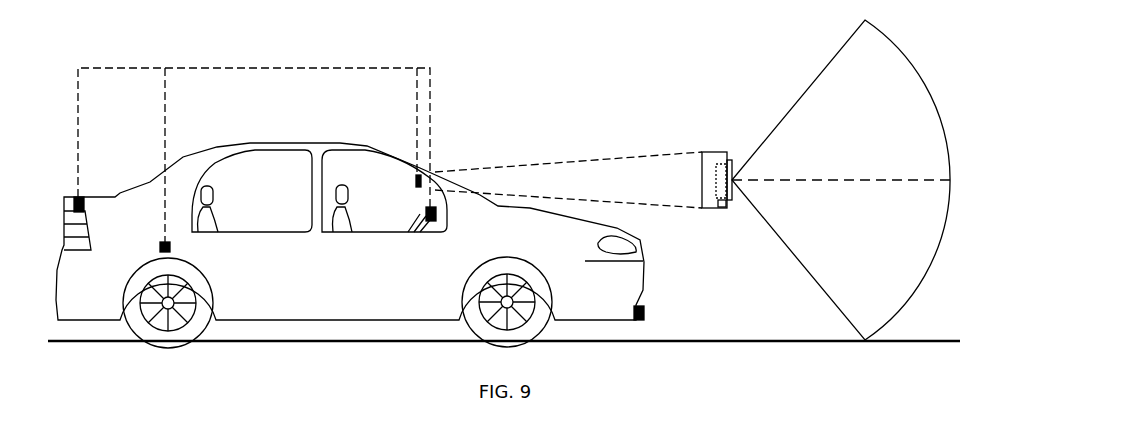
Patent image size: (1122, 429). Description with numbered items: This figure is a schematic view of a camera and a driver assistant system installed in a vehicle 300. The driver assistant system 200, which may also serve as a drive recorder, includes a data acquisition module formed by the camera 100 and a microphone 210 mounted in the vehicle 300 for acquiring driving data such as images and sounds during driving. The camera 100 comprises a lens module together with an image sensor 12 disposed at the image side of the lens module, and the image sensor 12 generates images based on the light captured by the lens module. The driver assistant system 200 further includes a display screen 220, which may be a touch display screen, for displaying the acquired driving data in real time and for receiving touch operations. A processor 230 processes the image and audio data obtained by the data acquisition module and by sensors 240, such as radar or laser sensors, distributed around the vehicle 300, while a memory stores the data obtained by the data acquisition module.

The driver assistant system 200 is at (165, 45).
The sensors 240 is at (88, 198).
The vehicle 300 is at (220, 152).
The processor 230 is at (428, 212).
The camera 100 is at (733, 160).
The image sensor 12 is at (718, 163).
The microphone 210 is at (720, 208).
The display screen 220 is at (703, 190).